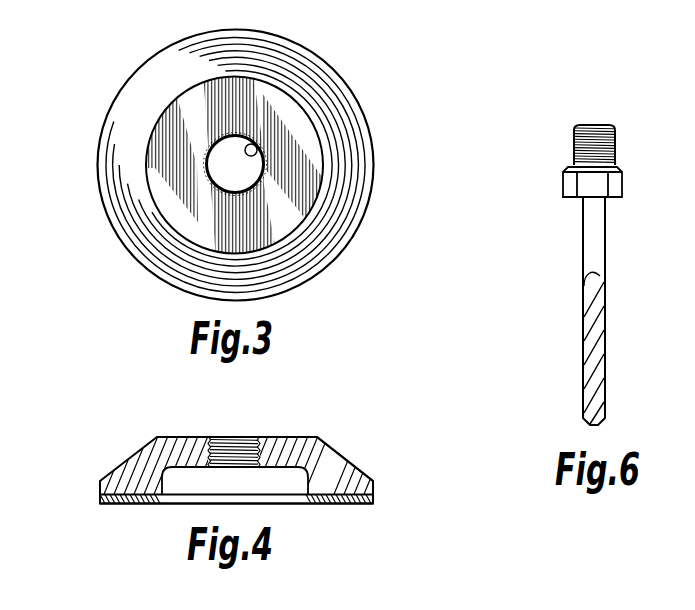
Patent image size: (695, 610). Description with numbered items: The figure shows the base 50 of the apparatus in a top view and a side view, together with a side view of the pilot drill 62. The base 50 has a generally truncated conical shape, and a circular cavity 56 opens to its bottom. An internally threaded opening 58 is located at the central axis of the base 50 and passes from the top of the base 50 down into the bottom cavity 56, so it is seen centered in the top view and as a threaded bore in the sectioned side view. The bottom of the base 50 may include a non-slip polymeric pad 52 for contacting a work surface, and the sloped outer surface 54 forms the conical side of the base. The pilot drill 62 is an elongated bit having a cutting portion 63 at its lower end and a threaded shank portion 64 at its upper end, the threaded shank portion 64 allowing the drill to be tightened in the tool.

In FIG. 3, the base 50 is at (121, 83).
In FIG. 4, the base 50 is at (137, 435).
In FIG. 4, the non-slip polymeric pad 52 is at (337, 507).
In FIG. 4, the sloped side surface 54 is at (317, 452).
In FIG. 4, the circular cavity 56 is at (190, 485).
In FIG. 3, the internally threaded opening 58 is at (249, 144).
In FIG. 4, the internally threaded opening 58 is at (240, 437).
In FIG. 6, the pilot drill 62 is at (581, 298).
In FIG. 6, the cutting portion 63 is at (582, 402).
In FIG. 6, the threaded shank portion 64 is at (575, 153).